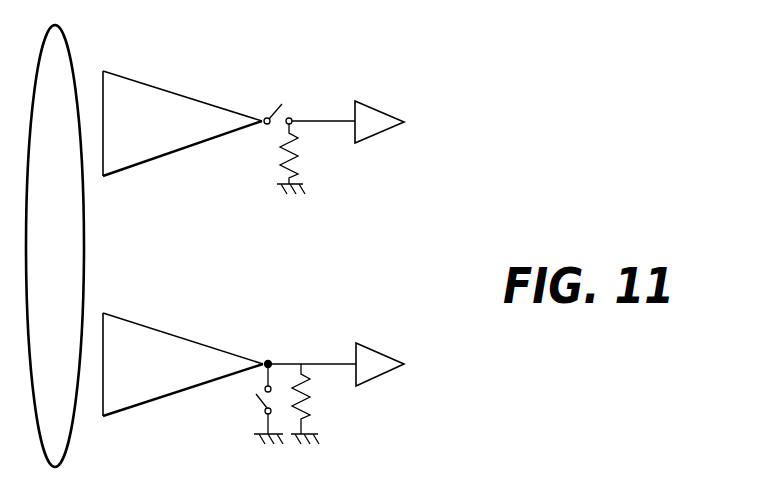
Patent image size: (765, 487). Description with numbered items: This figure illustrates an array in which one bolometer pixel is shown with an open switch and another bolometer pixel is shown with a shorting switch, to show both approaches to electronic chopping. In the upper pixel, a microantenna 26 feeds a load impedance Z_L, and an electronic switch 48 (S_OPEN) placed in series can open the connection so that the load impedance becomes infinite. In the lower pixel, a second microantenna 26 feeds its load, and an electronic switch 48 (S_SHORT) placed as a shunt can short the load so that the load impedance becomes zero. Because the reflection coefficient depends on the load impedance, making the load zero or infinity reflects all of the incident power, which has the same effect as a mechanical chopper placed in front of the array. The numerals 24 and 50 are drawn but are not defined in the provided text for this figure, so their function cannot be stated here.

The spacecraft / satellite body 24 is at (63, 33).
The microantenna 26 is at (157, 327).
The electronic switch 48 is at (277, 108).
The load impedance circuit 50 is at (261, 126).